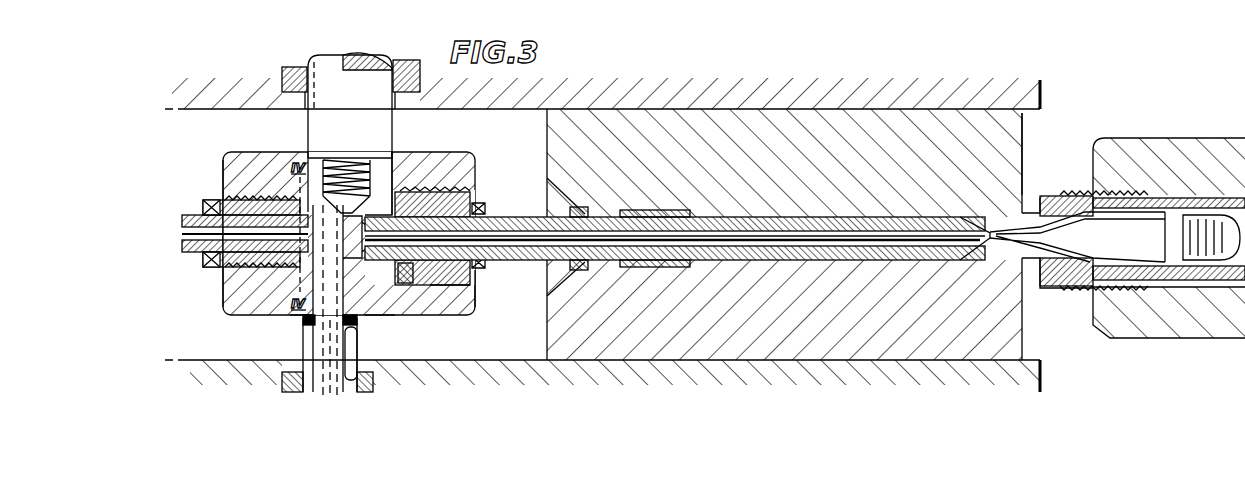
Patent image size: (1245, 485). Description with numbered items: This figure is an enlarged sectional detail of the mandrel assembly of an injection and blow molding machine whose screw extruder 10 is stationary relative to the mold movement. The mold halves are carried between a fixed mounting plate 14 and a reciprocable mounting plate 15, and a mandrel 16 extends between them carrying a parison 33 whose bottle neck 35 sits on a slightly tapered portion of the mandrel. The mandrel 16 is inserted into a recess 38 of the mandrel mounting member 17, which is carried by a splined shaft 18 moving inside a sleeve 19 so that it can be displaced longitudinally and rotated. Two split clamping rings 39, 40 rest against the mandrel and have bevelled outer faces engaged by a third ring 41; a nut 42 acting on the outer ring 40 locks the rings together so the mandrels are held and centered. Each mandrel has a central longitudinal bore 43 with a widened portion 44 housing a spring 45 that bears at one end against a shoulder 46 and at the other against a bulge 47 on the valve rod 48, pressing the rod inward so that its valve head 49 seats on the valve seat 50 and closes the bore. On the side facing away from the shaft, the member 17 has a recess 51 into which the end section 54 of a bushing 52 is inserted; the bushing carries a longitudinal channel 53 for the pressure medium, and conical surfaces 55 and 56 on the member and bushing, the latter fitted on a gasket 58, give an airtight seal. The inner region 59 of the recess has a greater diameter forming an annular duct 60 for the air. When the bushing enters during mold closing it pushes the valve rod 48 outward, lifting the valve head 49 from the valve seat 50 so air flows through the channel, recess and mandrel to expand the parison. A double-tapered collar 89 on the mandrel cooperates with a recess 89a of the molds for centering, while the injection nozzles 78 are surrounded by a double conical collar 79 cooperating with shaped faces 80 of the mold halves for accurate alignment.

The screw extruder 10 is at (1203, 148).
The fixed mounting plate 14 is at (222, 370).
The reciprocable mounting plate 15 is at (240, 94).
The mandrel 16 is at (915, 215).
The mandrel mounting member 17 is at (462, 158).
The shaft 18 is at (368, 78).
The sleeve 19 is at (407, 72).
The parison 33 is at (814, 215).
The bottle neck 35 is at (625, 217).
The recess 38 is at (408, 280).
The clamping ring 39 is at (402, 203).
The clamping ring 40 is at (467, 194).
The third ring 41 is at (430, 185).
The nut 42 is at (477, 282).
The central longitudinal bore 43 is at (746, 237).
The widened portion 44 is at (438, 283).
The spring 45 is at (375, 313).
The shoulder 46 is at (482, 208).
The bulge 47 is at (374, 262).
The valve rod 48 is at (828, 262).
The valve head 49 is at (988, 243).
The valve seat 50 is at (940, 217).
The recess 51 is at (350, 326).
The bushing 52 is at (317, 390).
The longitudinal channel 53 is at (330, 394).
The end section 54 is at (290, 272).
The conical surface 55 is at (300, 317).
The conical surface 56 is at (313, 333).
The gasket 58 is at (357, 382).
The inner region 59 is at (361, 162).
The annular duct 60 is at (323, 162).
The injection nozzle 78 is at (988, 258).
The double conical collar 79 is at (1000, 213).
The shaped face 80 is at (990, 256).
The double-tapered collar 89 is at (577, 208).
The recess 89a is at (573, 259).